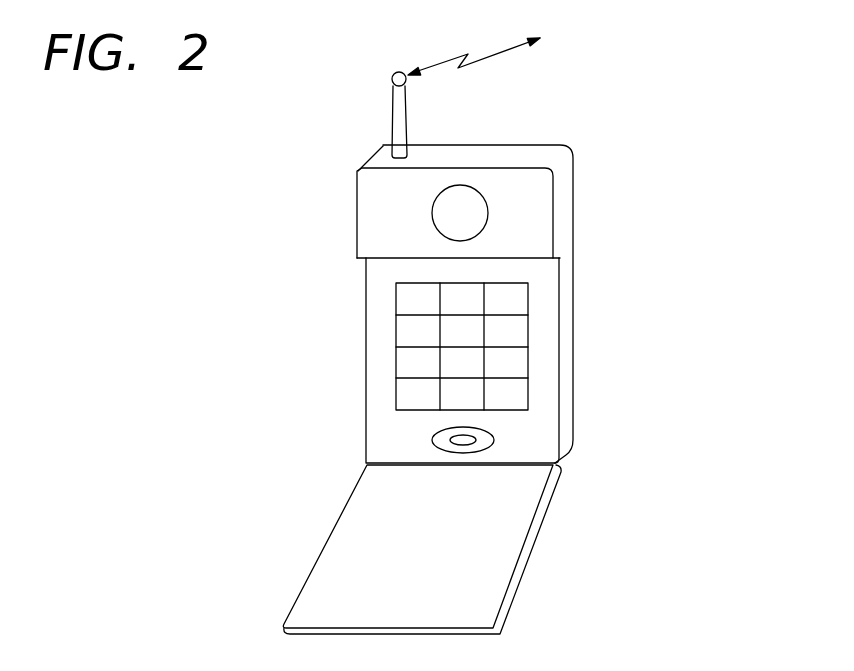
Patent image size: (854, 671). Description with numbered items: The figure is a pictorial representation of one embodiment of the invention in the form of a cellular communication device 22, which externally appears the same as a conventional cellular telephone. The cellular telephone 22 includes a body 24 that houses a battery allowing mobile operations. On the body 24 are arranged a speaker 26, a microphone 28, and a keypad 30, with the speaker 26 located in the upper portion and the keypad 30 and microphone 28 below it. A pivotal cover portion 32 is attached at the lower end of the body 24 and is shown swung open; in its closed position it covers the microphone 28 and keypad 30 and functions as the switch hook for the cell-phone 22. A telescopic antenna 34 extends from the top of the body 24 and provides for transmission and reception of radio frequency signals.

The cellular communication device 22 is at (632, 197).
The body 24 is at (565, 303).
The speaker 26 is at (443, 208).
The microphone 28 is at (443, 447).
The keypad 30 is at (403, 360).
The pivotal cover portion 32 is at (488, 557).
The telescopic antenna 34 is at (400, 125).